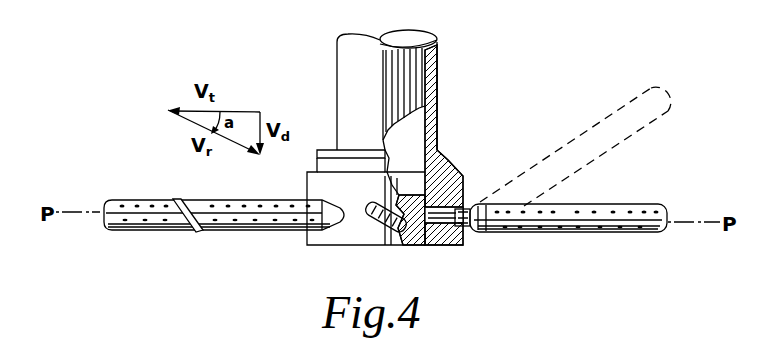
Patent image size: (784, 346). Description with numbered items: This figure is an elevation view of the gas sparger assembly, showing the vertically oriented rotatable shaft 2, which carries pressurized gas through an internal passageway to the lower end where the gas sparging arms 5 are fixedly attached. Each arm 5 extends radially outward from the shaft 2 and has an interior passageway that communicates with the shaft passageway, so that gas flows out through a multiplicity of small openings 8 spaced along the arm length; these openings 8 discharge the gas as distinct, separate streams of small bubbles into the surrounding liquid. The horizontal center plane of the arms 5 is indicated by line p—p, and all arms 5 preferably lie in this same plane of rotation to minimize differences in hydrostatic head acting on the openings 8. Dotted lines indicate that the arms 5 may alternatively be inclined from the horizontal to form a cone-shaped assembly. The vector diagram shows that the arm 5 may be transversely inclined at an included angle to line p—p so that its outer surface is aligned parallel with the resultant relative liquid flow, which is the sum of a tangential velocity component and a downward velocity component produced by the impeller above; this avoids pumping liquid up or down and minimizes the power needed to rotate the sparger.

The rotatable shaft 2 is at (428, 118).
The gas sparging arms 5 is at (588, 231).
The openings 8 is at (631, 211).